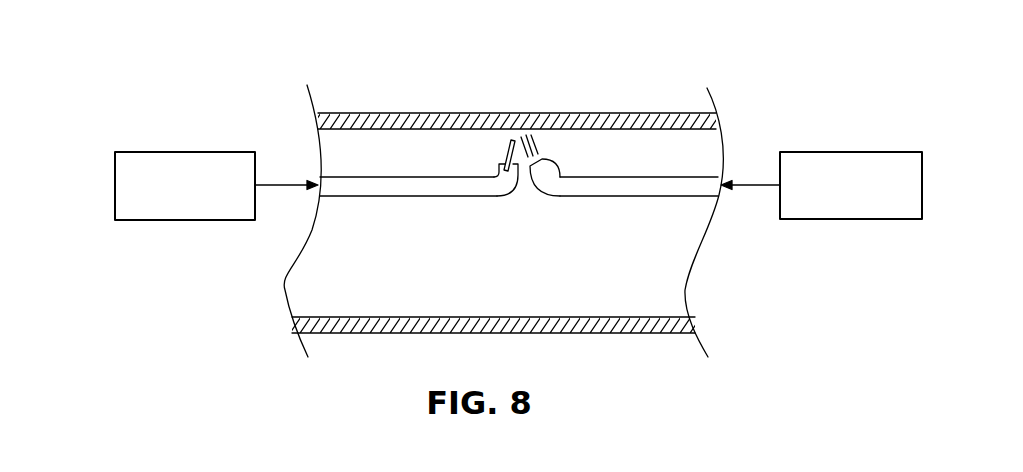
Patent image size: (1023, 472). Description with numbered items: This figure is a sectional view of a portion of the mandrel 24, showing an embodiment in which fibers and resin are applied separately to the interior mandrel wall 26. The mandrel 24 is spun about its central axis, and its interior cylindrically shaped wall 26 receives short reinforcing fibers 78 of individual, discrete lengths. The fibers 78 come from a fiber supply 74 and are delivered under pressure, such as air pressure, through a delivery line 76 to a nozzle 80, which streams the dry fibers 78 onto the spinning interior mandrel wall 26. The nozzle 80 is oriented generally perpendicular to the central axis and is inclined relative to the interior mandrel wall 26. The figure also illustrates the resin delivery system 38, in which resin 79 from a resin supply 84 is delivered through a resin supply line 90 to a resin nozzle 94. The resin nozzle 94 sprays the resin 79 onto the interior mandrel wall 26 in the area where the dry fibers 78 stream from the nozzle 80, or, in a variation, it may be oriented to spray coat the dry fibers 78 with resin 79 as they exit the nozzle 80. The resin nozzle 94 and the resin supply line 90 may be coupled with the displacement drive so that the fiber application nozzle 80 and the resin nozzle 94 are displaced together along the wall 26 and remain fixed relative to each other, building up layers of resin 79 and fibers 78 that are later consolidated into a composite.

The mandrel 24 is at (637, 325).
The interior mandrel wall 26 is at (335, 307).
The resin delivery system 38 is at (663, 78).
The fiber supply 74 is at (185, 152).
The delivery line 76 is at (370, 186).
The fibers 78 is at (506, 148).
The resin 79 is at (536, 147).
The nozzle 80 is at (482, 168).
The resin supply 84 is at (850, 152).
The resin supply line 90 is at (627, 185).
The resin nozzle 94 is at (566, 158).